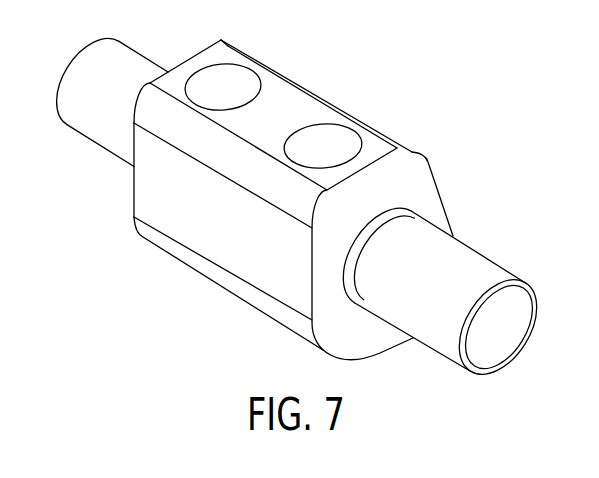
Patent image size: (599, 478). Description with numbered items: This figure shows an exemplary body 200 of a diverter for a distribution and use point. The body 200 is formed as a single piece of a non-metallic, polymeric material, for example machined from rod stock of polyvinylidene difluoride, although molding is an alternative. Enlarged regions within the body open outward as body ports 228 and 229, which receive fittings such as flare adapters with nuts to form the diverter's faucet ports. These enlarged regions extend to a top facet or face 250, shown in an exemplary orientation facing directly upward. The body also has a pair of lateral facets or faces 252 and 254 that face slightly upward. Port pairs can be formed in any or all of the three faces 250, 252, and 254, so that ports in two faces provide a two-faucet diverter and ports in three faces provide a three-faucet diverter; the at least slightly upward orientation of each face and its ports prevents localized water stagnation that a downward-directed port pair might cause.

The body 200 is at (305, 197).
The body port 228 is at (326, 139).
The body port 229 is at (227, 80).
The top facet/face 250 is at (285, 94).
The lateral facet/face 252 is at (182, 232).
The lateral facet/face 254 is at (442, 203).